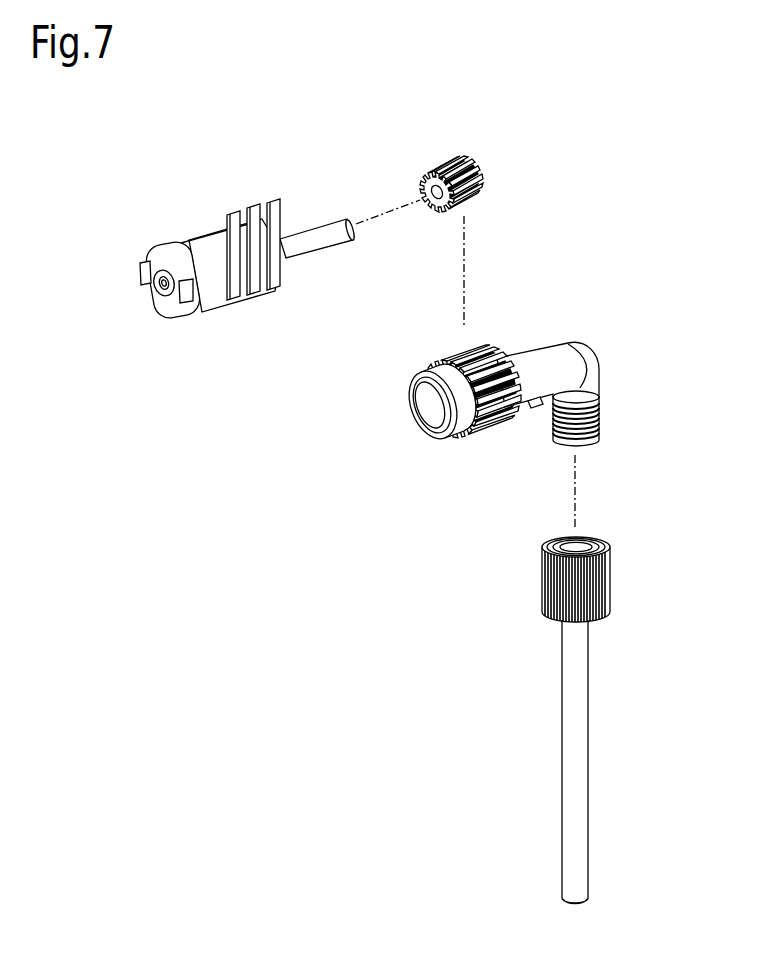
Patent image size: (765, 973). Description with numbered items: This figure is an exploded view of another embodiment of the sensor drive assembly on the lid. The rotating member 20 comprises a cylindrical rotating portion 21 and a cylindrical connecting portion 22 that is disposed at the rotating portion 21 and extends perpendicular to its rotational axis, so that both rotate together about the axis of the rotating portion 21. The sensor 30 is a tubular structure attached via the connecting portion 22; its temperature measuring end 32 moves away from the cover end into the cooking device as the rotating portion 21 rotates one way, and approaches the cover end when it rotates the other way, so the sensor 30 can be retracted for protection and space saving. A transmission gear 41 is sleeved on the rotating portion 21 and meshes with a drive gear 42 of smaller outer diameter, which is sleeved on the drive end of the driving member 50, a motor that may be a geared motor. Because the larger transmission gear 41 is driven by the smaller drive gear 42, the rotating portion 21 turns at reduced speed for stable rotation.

The rotating member 20 is at (530, 376).
The rotating portion 21 is at (433, 408).
The connecting portion 22 is at (582, 387).
The sensor 30 is at (612, 731).
The temperature measuring end 32 is at (583, 883).
The transmission gear 41 is at (458, 340).
The drive gear 42 is at (458, 157).
The driving member 50 is at (247, 277).